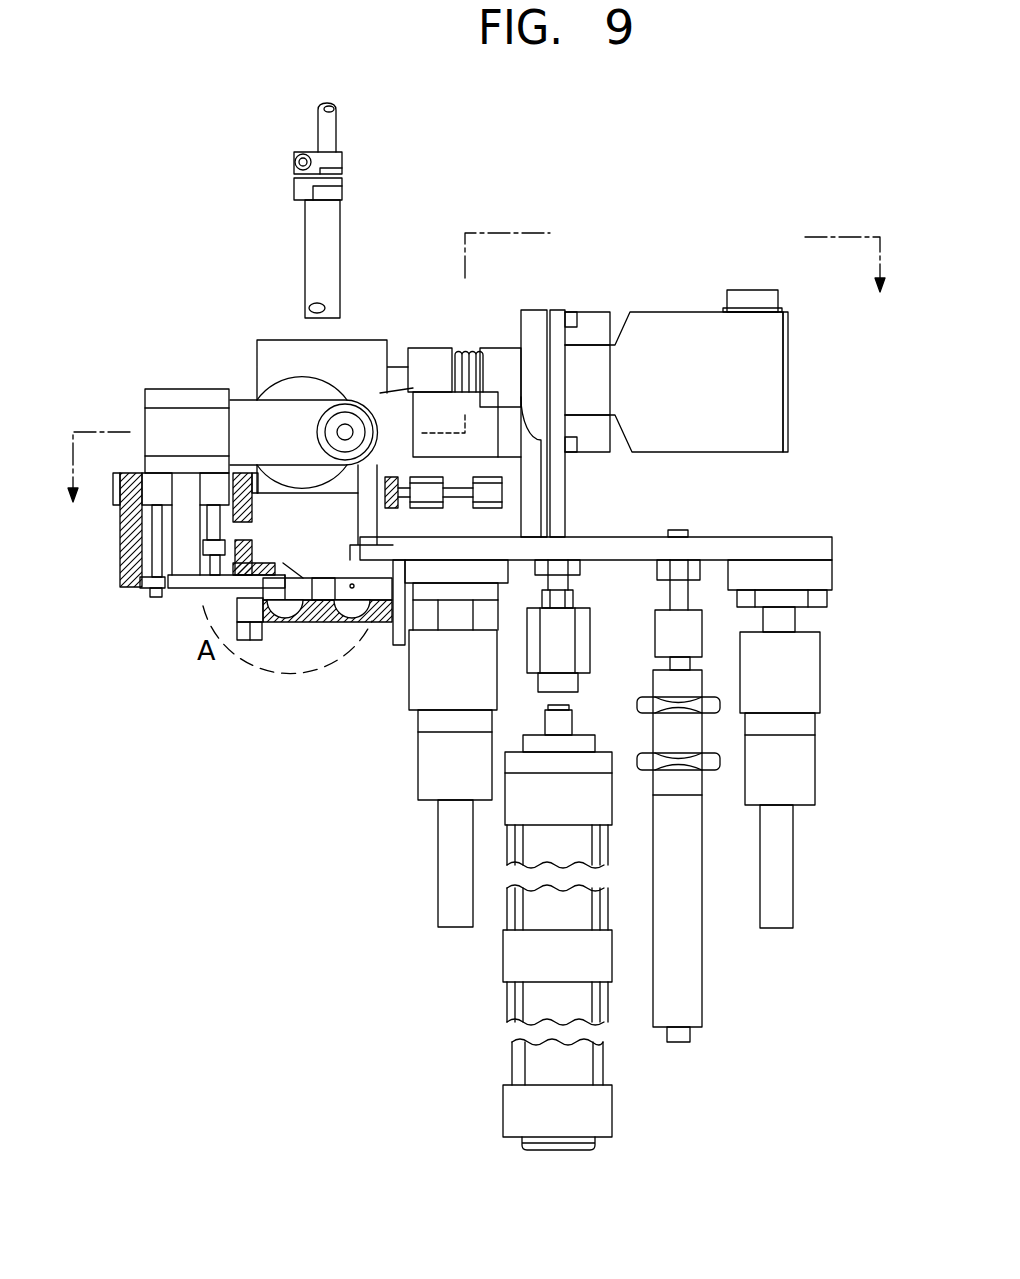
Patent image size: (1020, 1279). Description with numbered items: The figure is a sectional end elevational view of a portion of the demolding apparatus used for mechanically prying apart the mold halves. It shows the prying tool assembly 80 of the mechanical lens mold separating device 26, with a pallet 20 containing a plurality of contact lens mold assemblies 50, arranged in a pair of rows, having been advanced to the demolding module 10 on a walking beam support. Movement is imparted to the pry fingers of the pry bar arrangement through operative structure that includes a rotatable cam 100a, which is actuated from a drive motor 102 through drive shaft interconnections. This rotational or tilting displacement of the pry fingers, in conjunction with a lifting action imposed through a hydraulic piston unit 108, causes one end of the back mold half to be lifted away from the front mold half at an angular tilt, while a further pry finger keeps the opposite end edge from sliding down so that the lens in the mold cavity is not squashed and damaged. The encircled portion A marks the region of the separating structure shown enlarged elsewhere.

The demolding module 10 is at (482, 369).
The rotatable cam 100a is at (257, 380).
The mechanical lens mold separating device 26 is at (493, 316).
The drive motor 102 is at (693, 455).
The prying tool assembly 80 is at (215, 600).
The pallet 20 is at (343, 623).
The contact lens mold assembly 50 is at (285, 622).
The hydraulic piston unit 108 is at (597, 1060).